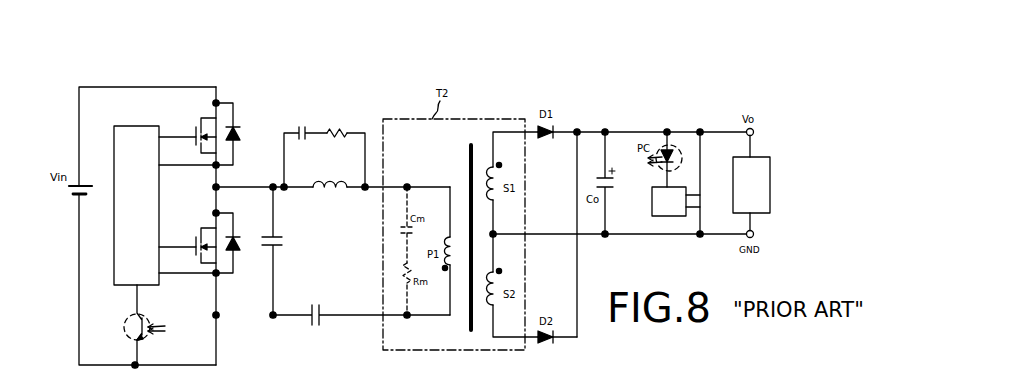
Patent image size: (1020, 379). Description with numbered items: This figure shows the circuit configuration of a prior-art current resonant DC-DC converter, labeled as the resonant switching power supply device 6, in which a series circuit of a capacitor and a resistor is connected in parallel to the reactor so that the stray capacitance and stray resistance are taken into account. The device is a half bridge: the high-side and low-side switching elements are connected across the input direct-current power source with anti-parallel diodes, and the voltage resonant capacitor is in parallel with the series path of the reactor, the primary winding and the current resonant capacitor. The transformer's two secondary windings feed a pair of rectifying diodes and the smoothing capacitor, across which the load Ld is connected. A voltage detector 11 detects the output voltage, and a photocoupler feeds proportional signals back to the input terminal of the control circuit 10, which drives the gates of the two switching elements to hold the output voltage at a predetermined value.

The resonant converter (prior art) 6 is at (301, 72).
The control circuit 10 is at (145, 125).
The voltage detector 11 is at (660, 216).
The load Ld is at (765, 157).